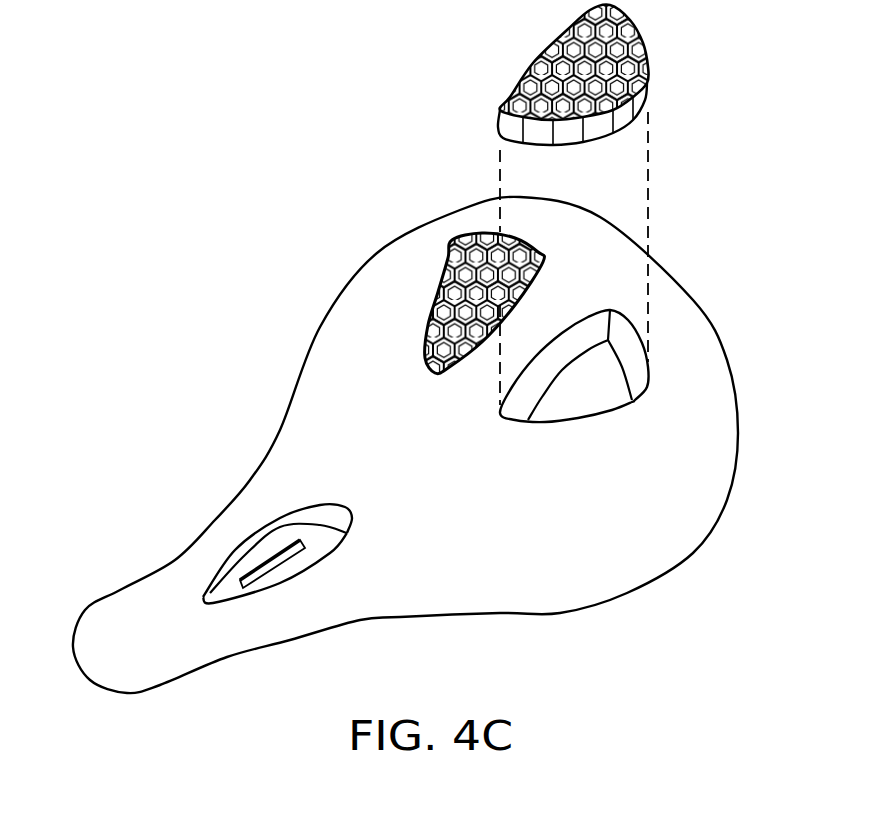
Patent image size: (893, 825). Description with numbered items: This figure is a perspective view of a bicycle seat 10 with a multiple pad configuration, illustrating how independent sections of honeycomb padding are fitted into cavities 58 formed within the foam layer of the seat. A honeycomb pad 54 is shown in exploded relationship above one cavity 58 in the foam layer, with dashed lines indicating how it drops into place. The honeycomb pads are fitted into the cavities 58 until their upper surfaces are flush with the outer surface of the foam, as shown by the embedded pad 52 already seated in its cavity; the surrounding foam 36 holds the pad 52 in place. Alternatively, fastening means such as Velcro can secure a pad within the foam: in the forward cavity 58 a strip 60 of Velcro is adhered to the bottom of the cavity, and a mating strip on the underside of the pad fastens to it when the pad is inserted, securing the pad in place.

The seat 10 is at (300, 325).
The foam 36 is at (650, 545).
The embedded pad 52 is at (450, 260).
The honeycomb pad 54 is at (640, 52).
The cavities 58 is at (613, 377).
The strip 60 is at (247, 575).